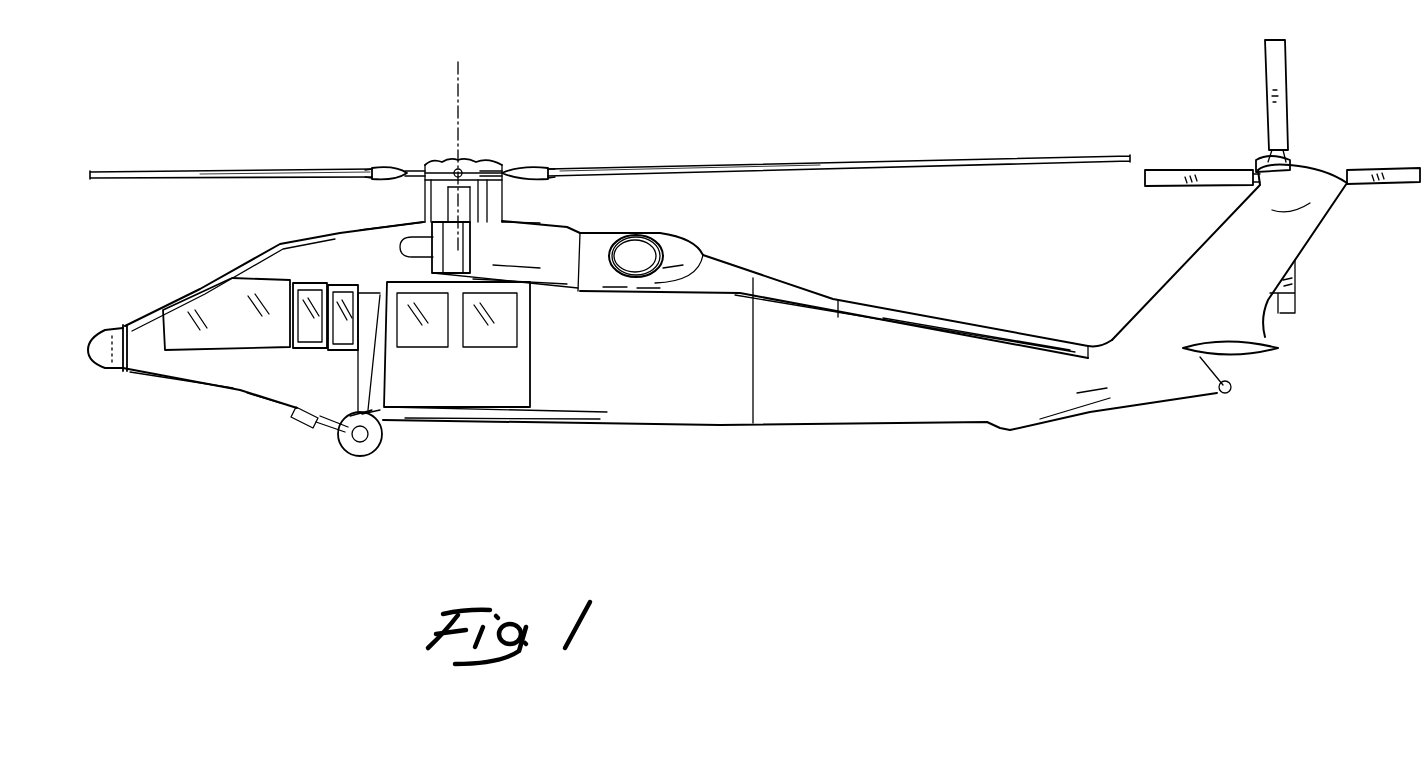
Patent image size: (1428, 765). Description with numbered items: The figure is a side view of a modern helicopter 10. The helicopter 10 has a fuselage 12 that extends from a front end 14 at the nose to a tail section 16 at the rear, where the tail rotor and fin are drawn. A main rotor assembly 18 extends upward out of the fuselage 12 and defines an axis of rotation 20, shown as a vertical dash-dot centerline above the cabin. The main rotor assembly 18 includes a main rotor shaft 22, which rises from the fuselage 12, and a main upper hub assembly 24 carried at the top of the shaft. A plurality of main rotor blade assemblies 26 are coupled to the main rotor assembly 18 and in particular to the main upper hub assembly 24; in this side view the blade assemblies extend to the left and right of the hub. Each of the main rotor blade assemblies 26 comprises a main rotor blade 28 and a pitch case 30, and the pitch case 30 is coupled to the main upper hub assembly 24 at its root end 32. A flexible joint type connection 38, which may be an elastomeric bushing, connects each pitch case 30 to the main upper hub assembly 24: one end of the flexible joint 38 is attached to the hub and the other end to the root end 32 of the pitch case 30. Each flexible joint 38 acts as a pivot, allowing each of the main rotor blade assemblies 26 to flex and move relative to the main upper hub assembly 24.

The helicopter 10 is at (720, 448).
The fuselage 12 is at (808, 400).
The front end 14 is at (142, 358).
The tail section 16 is at (1260, 318).
The main rotor assembly 18 is at (373, 207).
The axis of rotation 20 is at (458, 75).
The main rotor shaft 22 is at (460, 210).
The main upper hub assembly 24 is at (498, 160).
The main rotor blade assemblies 26 is at (215, 170).
The main rotor blade 28 is at (232, 177).
The pitch case 30 is at (380, 170).
The root end 32 is at (400, 172).
The flexible joint type connection 38 is at (407, 177).